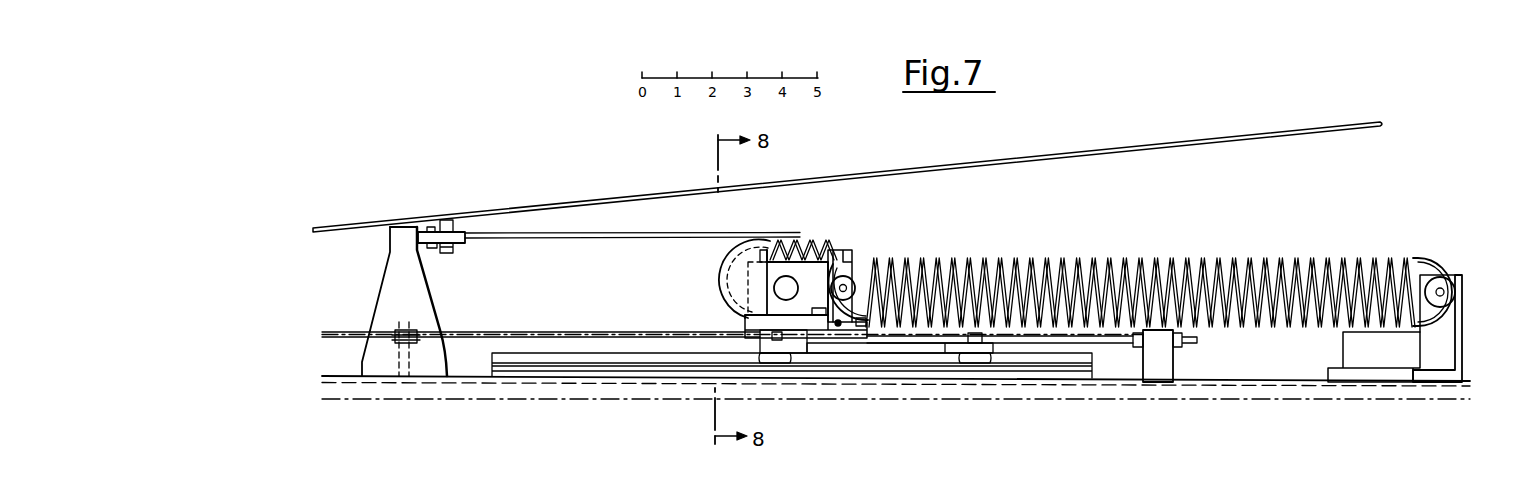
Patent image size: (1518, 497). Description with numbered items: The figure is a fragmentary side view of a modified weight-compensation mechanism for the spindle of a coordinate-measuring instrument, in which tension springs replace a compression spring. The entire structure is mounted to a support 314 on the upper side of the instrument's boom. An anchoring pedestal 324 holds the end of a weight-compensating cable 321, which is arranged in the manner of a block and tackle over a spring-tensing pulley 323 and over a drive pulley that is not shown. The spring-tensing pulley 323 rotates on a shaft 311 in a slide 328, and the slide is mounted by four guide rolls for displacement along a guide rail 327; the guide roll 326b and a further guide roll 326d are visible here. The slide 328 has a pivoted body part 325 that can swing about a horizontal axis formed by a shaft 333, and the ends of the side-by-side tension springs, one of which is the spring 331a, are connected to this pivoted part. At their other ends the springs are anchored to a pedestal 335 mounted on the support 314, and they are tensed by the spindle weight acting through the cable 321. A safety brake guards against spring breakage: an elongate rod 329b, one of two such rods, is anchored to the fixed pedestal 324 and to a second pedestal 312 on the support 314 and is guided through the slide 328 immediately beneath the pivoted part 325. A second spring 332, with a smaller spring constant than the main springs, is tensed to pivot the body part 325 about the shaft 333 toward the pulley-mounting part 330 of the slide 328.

The shaft 311 is at (792, 286).
The second pedestal 312 is at (1167, 362).
The support 314 is at (1233, 380).
The weight-compensating cable 321 is at (1048, 158).
The spring-tensing pulley 323 is at (738, 272).
The anchoring pedestal 324 is at (392, 283).
The pivoted body part 325 is at (856, 260).
The guide roll 326b is at (775, 364).
The guide roll 326d is at (990, 365).
The guide rail 327 is at (548, 363).
The slide 328 is at (930, 346).
The elongate rod 329b is at (1110, 341).
The pulley-mounting part 330 is at (740, 292).
The tension spring 331a is at (1108, 258).
The second spring 332 is at (815, 250).
The shaft 333 is at (841, 326).
The pedestal 335 is at (1455, 274).